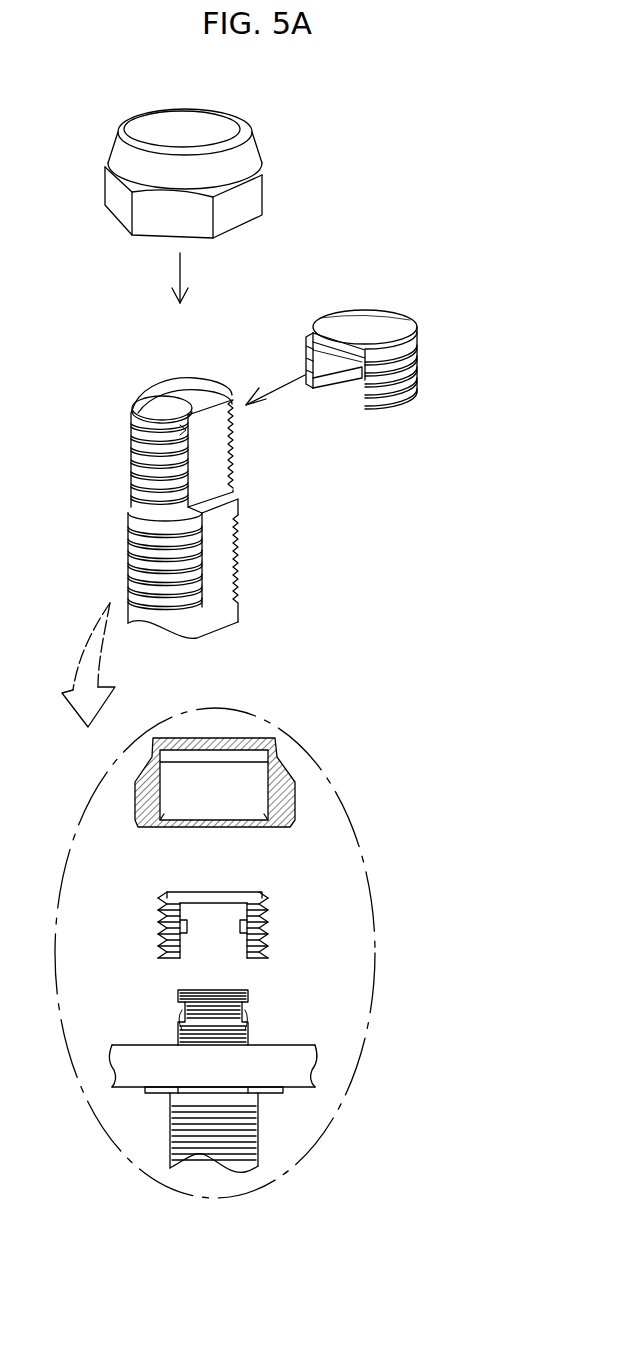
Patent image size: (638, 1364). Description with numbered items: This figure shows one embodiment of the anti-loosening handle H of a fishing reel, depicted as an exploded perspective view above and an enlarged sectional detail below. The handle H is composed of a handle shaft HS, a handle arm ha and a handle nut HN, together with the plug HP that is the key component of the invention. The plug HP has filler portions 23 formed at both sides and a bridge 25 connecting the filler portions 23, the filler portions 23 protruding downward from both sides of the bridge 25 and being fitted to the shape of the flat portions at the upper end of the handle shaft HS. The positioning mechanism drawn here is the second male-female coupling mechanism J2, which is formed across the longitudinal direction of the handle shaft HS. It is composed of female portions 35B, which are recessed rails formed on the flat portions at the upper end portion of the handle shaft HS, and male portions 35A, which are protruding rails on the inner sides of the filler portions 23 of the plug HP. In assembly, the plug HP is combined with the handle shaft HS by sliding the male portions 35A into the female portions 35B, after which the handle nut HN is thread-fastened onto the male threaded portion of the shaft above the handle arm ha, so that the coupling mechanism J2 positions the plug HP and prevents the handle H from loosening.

The handle H is at (90, 108).
The handle nut HN is at (270, 138).
The plug HP is at (385, 309).
The handle shaft HS is at (252, 561).
The bridge 25 is at (348, 320).
The filler portions 23 is at (372, 402).
The male portions 35A is at (314, 336).
The female portions 35B is at (132, 438).
The second male-female coupling mechanism J2 is at (55, 318).
The handle arm ha is at (133, 1046).